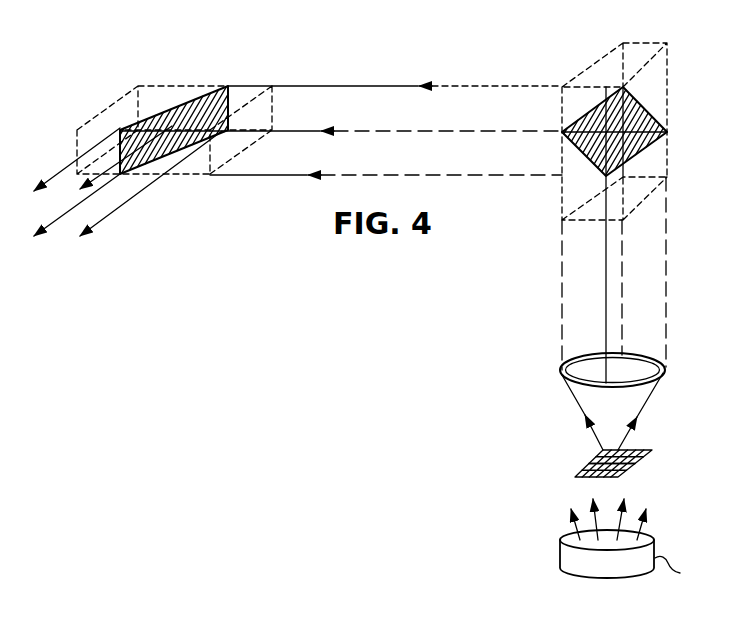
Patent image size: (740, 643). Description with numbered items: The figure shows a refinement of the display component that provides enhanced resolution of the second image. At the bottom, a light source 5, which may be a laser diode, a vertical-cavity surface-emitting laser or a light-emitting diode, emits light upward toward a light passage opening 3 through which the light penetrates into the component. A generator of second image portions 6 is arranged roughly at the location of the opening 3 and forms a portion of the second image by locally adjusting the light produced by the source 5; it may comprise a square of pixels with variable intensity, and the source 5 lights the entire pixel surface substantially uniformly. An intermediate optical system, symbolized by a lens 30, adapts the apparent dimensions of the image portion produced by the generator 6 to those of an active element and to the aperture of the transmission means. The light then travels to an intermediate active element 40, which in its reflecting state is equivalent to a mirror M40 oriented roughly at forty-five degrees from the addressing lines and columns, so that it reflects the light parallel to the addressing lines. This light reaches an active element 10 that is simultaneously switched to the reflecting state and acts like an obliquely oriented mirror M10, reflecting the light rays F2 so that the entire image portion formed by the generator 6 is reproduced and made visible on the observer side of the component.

The active element 10 is at (160, 83).
The mirror M10 is at (198, 98).
The light rays F2 is at (135, 195).
The intermediate active element 40 is at (570, 80).
The mirror M40 is at (615, 95).
The lens 30 is at (562, 370).
The generator of second image portions 6 is at (600, 463).
The light passage opening 3 is at (578, 477).
The light source 5 is at (560, 557).